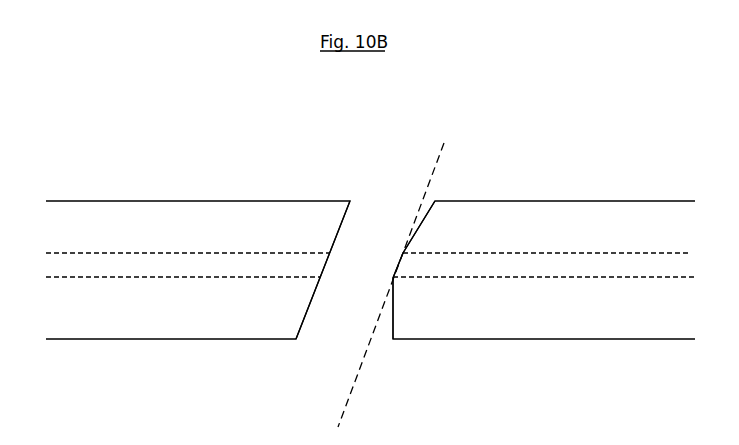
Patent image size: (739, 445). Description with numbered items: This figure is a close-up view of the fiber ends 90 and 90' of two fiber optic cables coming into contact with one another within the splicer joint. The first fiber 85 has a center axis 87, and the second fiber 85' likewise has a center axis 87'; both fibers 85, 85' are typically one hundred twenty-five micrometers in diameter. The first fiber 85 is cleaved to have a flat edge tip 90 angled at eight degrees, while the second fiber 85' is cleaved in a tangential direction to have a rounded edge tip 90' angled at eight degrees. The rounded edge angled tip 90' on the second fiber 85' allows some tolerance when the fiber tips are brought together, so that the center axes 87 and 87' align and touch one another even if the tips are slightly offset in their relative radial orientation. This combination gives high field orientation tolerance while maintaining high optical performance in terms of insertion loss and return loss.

The first fiber 85 is at (198, 243).
The center axis 87 is at (188, 216).
The flat edge angled tip 90 is at (308, 298).
The second fiber 85' is at (544, 242).
The center axis 87' is at (544, 216).
The rounded edge angled tip 90' is at (411, 308).